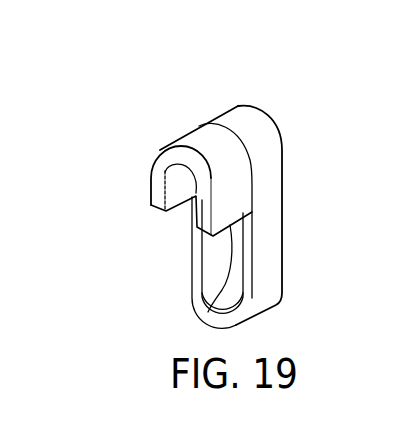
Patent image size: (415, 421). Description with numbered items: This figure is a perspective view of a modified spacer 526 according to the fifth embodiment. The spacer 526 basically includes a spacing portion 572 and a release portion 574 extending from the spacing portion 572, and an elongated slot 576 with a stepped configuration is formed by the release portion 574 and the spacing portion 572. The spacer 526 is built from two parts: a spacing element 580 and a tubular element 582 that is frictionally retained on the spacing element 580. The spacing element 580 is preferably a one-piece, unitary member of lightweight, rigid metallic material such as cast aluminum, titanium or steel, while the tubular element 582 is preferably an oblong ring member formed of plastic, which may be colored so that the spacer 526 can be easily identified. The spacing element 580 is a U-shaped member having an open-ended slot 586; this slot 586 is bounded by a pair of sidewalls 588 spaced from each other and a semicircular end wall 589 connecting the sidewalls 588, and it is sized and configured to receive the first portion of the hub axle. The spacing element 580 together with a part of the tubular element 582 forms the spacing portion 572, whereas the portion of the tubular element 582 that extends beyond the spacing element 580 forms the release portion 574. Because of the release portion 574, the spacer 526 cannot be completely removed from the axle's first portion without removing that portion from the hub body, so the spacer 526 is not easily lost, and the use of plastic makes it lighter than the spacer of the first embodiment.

The spacer 526 is at (201, 98).
The tubular element 582 is at (231, 100).
The spacing portion 572 is at (290, 192).
The release portion 574 is at (290, 305).
The spacing element 580 is at (159, 146).
The semicircular end wall 589 is at (153, 168).
The sidewalls 588 is at (196, 192).
The open-ended slot 586 is at (179, 217).
The elongated slot 576 is at (225, 279).